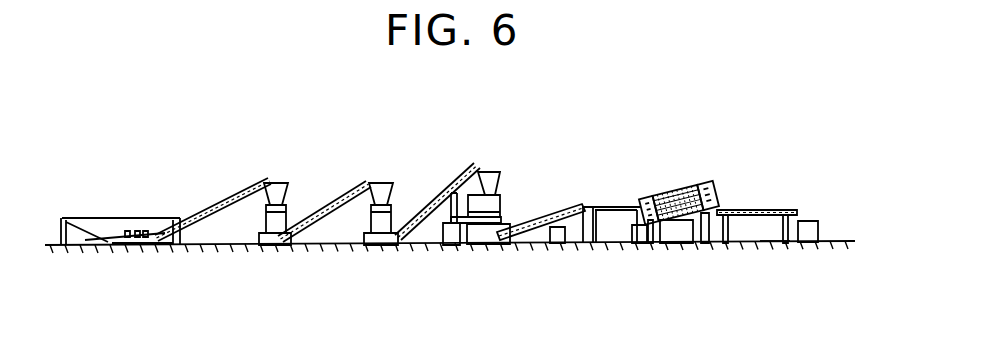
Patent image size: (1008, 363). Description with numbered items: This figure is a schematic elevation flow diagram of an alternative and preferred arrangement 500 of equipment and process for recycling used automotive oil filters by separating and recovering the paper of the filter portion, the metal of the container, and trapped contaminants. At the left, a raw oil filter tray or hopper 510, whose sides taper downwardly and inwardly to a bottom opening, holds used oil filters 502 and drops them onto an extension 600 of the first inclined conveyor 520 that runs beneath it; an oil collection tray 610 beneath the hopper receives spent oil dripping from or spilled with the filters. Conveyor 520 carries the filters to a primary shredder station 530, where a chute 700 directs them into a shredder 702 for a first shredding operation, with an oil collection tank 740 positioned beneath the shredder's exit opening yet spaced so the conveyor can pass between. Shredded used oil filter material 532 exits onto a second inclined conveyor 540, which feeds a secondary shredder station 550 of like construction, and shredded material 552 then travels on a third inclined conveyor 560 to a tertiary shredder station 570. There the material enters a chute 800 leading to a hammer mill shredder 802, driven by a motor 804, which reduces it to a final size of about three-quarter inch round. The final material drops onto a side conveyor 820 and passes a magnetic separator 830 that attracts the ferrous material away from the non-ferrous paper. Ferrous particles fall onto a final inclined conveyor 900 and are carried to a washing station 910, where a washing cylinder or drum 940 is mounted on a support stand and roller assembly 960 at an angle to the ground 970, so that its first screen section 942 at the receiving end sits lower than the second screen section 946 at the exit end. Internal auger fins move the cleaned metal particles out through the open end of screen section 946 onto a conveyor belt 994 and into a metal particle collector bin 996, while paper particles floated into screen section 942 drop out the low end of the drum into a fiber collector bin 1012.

The arrangement of equipment and process 500 is at (458, 100).
The raw oil filter tray or hopper 510 is at (130, 225).
The used oil filters 502 is at (200, 228).
The first inclined conveyor 520 is at (217, 220).
The primary shredder station 530 is at (275, 185).
The shredded used oil filter material 532 is at (318, 204).
The second inclined conveyor 540 is at (327, 220).
The secondary shredder station 550 is at (379, 185).
The shredded used oil filter material 552 is at (415, 202).
The third inclined conveyor 560 is at (428, 220).
The tertiary shredder station 570 is at (487, 160).
The extension of conveyor belt 600 is at (112, 246).
The oil collection tray 610 is at (136, 246).
The chute 700 is at (284, 180).
The shredder 702 is at (262, 230).
The oil collection tank 740 is at (276, 233).
The chute 800 is at (498, 174).
The hammer mill shredder 802 is at (503, 195).
The motor 804 is at (505, 220).
The side conveyor 820 is at (528, 246).
The magnetic separator 830 is at (560, 206).
The final inclined conveyor 900 is at (573, 246).
The washing station 910 is at (675, 155).
The washing cylinder or drum 940 is at (690, 186).
The first screen section 942 is at (646, 194).
The second screen section 946 is at (718, 186).
The support stand and roller assembly 960 is at (693, 246).
The ground 970 is at (770, 246).
The conveyor belt 994 is at (757, 211).
The metal particle collector bin 996 is at (812, 224).
The fiber collector bin 1012 is at (643, 246).